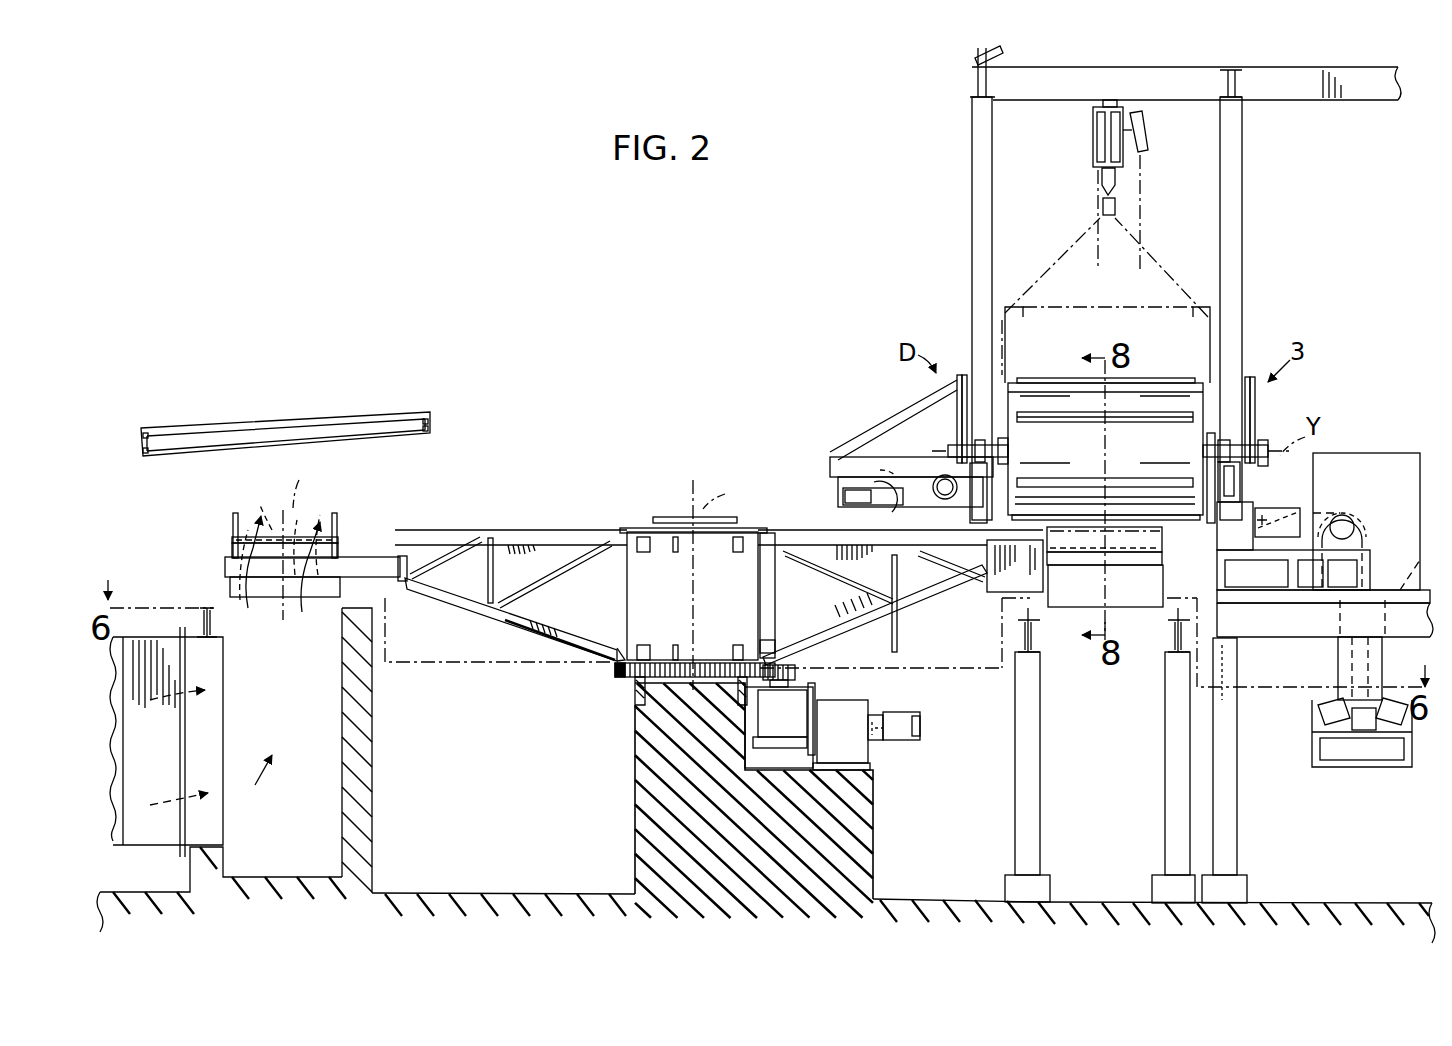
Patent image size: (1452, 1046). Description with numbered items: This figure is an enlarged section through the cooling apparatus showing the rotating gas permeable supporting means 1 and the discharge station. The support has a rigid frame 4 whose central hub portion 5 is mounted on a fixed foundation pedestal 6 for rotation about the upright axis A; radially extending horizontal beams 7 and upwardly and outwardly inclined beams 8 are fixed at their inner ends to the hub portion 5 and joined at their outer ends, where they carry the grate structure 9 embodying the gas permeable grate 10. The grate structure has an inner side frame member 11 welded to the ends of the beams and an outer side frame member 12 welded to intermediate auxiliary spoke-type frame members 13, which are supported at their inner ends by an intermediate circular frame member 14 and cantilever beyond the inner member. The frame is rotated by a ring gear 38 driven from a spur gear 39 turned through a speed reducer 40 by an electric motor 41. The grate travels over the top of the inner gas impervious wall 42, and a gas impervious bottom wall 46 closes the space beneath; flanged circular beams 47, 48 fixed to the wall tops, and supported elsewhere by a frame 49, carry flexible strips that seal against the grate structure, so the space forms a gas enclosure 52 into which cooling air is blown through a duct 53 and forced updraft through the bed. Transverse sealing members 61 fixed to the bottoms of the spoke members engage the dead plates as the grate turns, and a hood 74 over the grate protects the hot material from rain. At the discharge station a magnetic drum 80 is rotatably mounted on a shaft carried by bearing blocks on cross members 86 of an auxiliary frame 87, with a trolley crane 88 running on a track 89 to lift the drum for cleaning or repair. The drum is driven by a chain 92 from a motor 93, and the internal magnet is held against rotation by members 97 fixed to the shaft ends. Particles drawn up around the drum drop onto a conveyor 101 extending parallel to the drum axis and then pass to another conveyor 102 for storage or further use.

The gas permeable supporting means 1 is at (297, 548).
The rigid frame 4 is at (719, 574).
The central hub portion 5 is at (626, 600).
The fixed foundation pedestal 6 is at (635, 742).
The radially extending horizontal beams 7 is at (548, 533).
The upwardly and outwardly inclined beams 8 is at (512, 613).
The grate structure 9 is at (340, 502).
The gas permeable grate 10 is at (297, 530).
The inner side frame member 11 is at (342, 525).
The outer side frame member 12 is at (232, 530).
The intermediate auxiliary spoke-type frame members 13 is at (375, 565).
The intermediate circular frame member 14 is at (408, 580).
The ring gear 38 is at (617, 678).
The spur gear 39 is at (799, 671).
The speed reducer 40 is at (842, 702).
The electric motor 41 is at (903, 708).
The inner gas impervious wall 42 is at (372, 746).
The bottom wall 46 is at (278, 876).
The inner flanged circular beam 47 is at (345, 607).
The outer flanged circular beam 48 is at (200, 606).
The frame 49 is at (1015, 808).
The gas enclosure 52 is at (320, 793).
The duct 53 is at (146, 833).
The transverse sealing members 61 is at (272, 598).
The hood 74 is at (286, 423).
The magnetic drum 80 is at (1173, 386).
The cross members 86 is at (1240, 468).
The auxiliary frame 87 is at (1242, 252).
The trolley crane 88 is at (1085, 160).
The track 89 is at (1115, 107).
The chain 92 is at (1215, 525).
The motor 93 is at (1232, 558).
The members 97 is at (957, 434).
The conveyor 101 is at (931, 515).
The another conveyor 102 is at (1312, 713).